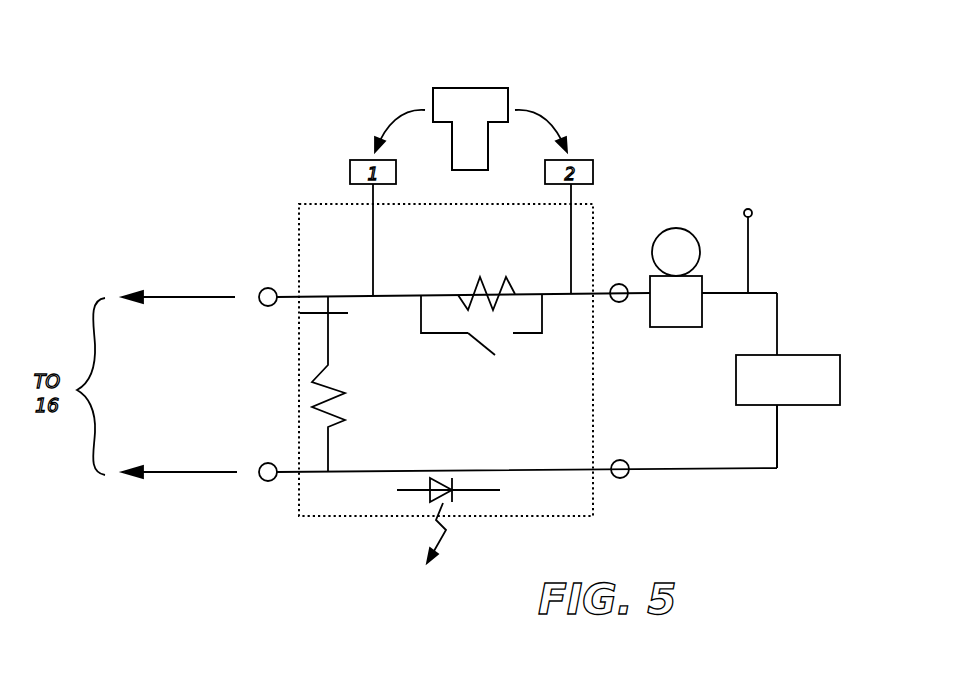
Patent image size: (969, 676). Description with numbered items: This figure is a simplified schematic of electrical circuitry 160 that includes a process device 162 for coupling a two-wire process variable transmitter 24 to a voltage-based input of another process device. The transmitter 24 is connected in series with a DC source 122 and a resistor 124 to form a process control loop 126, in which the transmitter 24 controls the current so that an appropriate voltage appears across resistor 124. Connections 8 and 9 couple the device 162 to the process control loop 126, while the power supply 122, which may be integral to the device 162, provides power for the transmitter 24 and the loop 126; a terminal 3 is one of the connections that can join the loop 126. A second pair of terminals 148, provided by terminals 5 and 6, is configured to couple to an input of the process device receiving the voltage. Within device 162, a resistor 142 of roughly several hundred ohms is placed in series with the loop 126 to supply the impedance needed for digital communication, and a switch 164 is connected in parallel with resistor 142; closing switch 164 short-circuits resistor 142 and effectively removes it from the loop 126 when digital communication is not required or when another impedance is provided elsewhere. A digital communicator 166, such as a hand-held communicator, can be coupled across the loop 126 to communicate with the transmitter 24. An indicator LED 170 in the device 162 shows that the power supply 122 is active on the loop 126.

The digital communicator 166 is at (493, 88).
The electrical circuitry 160 is at (676, 135).
The process device 162 is at (296, 517).
The resistor 142 is at (481, 282).
The switch 164 is at (502, 335).
The second pair of terminals 148 is at (295, 312).
The terminal 5 is at (307, 295).
The resistor 124 is at (340, 405).
The connection 8 is at (615, 302).
The terminal 3 is at (748, 233).
The process variable transmitter 24 is at (710, 244).
The DC source 122 is at (840, 383).
The connection 9 is at (624, 460).
The process control loop 126 is at (778, 435).
The terminal 6 is at (283, 478).
The LED 170 is at (418, 498).